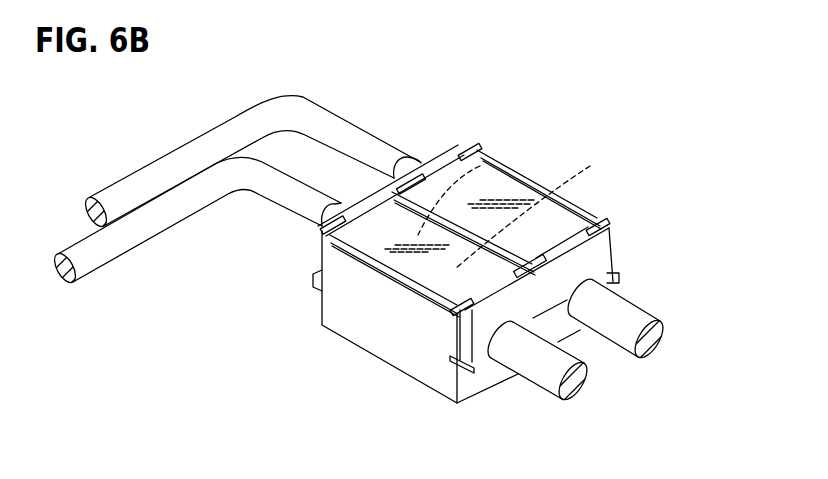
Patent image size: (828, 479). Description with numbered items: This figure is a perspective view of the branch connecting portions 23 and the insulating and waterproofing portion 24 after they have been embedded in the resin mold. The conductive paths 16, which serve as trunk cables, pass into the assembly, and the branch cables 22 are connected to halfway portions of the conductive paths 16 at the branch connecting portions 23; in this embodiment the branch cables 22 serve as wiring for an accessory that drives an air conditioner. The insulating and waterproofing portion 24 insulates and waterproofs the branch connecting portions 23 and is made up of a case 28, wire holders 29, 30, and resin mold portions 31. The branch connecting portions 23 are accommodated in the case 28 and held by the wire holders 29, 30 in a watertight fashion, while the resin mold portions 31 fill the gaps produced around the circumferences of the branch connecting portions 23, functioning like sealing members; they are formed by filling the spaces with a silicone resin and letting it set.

The conductive paths 16 is at (641, 302).
The branch cables 22 is at (73, 235).
The branch connecting portions 23 is at (572, 238).
The insulating and waterproofing portion 24 is at (490, 251).
The case 28 is at (418, 383).
The wire holder 29 is at (440, 167).
The wire holder 30 is at (601, 220).
The resin mold portions 31 is at (505, 187).